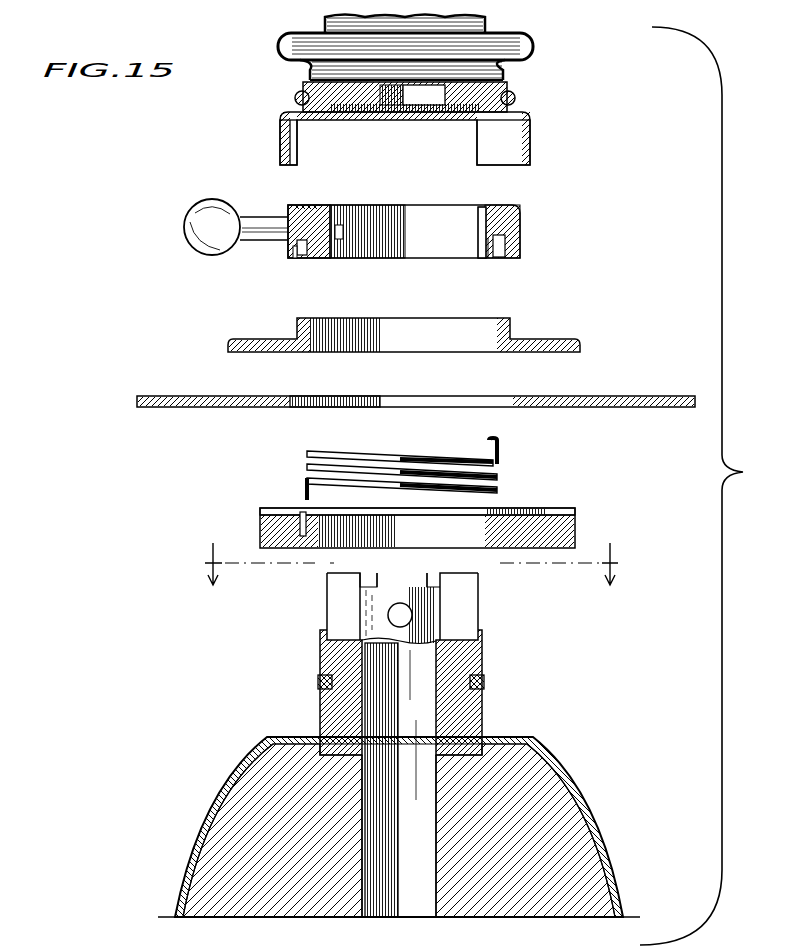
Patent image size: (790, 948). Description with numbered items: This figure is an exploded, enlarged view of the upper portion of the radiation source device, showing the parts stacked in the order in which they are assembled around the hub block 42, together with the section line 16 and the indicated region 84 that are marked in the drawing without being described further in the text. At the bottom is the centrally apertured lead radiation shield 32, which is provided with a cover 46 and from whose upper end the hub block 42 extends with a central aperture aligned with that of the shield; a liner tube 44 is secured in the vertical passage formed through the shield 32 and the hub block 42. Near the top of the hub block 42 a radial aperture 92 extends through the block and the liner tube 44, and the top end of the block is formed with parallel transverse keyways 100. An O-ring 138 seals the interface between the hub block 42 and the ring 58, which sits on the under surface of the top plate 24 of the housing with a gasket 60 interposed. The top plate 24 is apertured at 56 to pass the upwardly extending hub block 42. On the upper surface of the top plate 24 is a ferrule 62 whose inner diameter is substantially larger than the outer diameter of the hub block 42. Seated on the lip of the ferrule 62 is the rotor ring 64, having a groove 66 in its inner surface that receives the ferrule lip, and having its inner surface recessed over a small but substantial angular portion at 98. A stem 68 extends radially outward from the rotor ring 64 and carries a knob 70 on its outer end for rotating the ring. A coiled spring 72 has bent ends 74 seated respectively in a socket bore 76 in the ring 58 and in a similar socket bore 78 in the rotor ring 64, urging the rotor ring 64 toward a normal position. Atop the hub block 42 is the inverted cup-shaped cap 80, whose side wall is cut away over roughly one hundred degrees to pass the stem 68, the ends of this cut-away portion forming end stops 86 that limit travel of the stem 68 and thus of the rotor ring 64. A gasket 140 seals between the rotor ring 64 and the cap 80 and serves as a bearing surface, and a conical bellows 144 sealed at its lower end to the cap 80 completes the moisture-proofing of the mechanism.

The bellows 144 is at (536, 50).
The cap seating ring 84 is at (383, 132).
The cap 80 is at (532, 135).
The end stops 86 is at (298, 145).
The rotor ring 64 is at (521, 225).
The gasket 140 is at (318, 193).
The recessed inner surface portion 98 is at (480, 215).
The groove 66 is at (297, 258).
The socket bore 78 is at (490, 259).
The stem 68 is at (252, 215).
The knob 70 is at (186, 232).
The ferrule 62 is at (352, 305).
The top plate 24 is at (600, 396).
The aperture 56 is at (383, 396).
The coiled spring 72 is at (497, 470).
The bent ends 74 is at (497, 445).
The ring 58 is at (578, 523).
The gasket 60 is at (545, 509).
The socket bore 76 is at (303, 512).
The section line 16 is at (404, 564).
The hub block 42 is at (482, 650).
The keyways 100 is at (376, 575).
The radial aperture 92 is at (395, 612).
The O-ring 138 is at (487, 682).
The lead radiation shield 32 is at (245, 787).
The cover 46 is at (578, 790).
The liner tube 44 is at (362, 840).